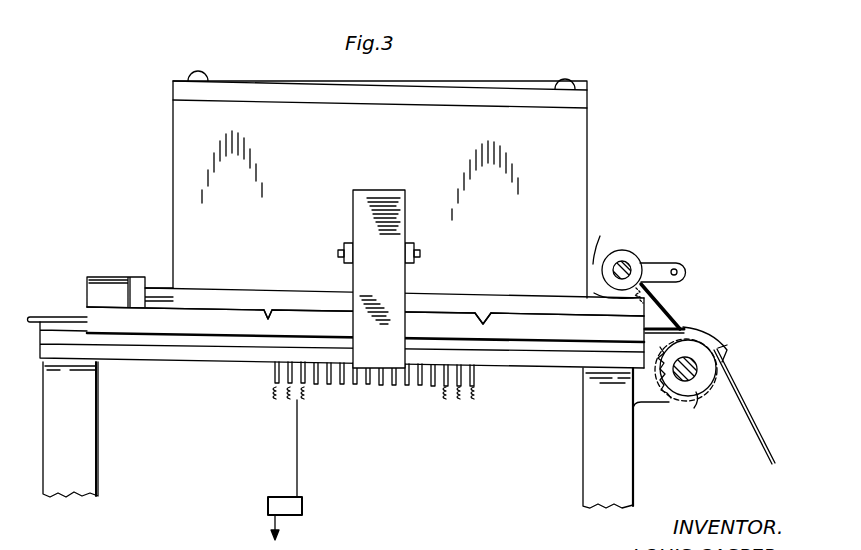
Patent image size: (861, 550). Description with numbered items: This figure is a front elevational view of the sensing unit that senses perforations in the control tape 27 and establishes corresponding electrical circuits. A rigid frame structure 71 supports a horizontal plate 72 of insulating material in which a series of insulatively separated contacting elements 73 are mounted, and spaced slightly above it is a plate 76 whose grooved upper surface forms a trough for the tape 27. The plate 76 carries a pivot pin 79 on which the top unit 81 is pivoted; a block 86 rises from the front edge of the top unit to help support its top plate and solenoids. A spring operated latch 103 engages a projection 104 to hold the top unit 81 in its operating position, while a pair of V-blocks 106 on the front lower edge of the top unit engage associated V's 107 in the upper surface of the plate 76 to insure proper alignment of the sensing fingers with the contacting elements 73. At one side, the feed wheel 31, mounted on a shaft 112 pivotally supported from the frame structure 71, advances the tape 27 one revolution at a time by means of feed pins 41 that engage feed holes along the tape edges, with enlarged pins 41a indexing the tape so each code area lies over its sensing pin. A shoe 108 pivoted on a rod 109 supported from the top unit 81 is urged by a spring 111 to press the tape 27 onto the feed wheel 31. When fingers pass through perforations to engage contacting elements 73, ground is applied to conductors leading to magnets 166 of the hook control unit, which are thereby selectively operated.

The tape 27 is at (44, 316).
The feed wheel 31 is at (697, 396).
The feed pins 41 is at (716, 390).
The enlarged pins 41a is at (672, 327).
The frame structure 71 is at (85, 443).
The horizontal plate 72 is at (135, 350).
The contacting elements 73 is at (381, 387).
The plate 76 is at (202, 323).
The pivot pin 79 is at (153, 289).
The top unit 81 is at (536, 95).
The block 86 is at (576, 158).
The spring operated latch 103 is at (392, 201).
The projection 104 is at (345, 344).
The V-blocks 106 is at (270, 311).
The V's 107 is at (277, 321).
The shoe 108 is at (665, 311).
The rod 109 is at (625, 262).
The spring 111 is at (660, 287).
The shaft 112 is at (682, 384).
The magnets 166 is at (287, 478).